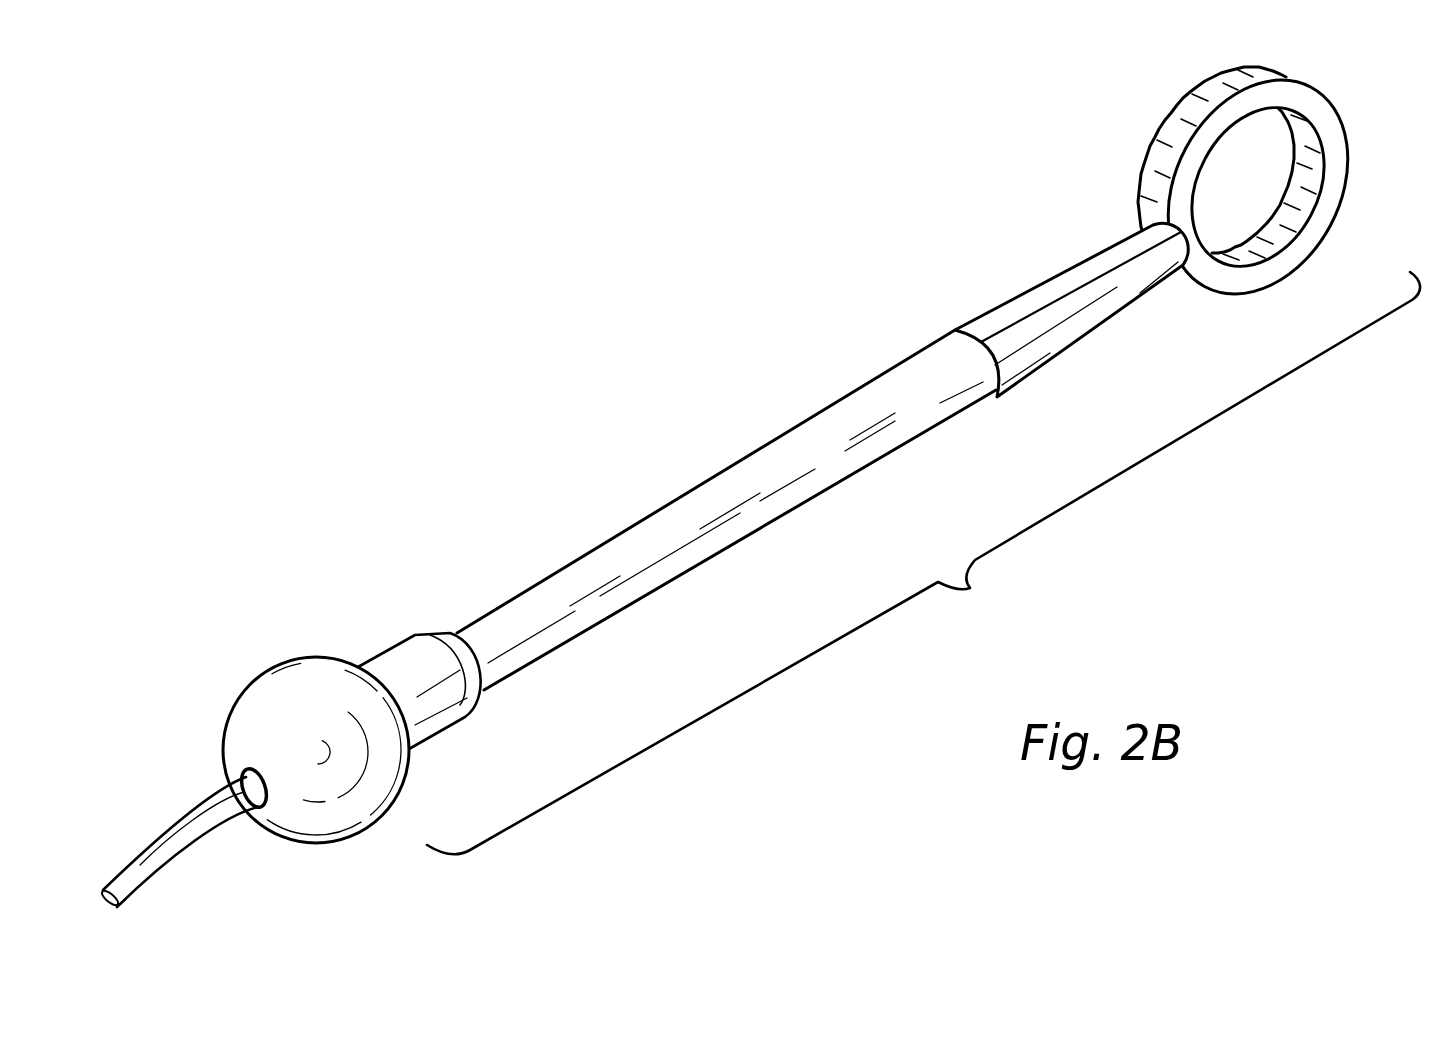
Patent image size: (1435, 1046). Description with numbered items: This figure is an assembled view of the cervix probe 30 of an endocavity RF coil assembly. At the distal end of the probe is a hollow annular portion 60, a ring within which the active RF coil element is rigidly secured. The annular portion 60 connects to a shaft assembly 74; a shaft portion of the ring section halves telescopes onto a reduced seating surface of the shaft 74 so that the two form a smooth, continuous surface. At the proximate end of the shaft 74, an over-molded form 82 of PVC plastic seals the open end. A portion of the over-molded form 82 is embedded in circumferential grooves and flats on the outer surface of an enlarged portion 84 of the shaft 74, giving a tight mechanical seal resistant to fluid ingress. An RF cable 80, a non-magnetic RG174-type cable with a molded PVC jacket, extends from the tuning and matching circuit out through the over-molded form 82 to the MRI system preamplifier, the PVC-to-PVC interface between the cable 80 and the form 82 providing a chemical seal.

The cervix probe 30 is at (923, 563).
The hollow annular portion 60 is at (1148, 124).
The shaft assembly 74 is at (720, 462).
The RF cable 80 is at (170, 863).
The over-molded form 82 is at (194, 700).
The enlarged portion 84 is at (428, 728).